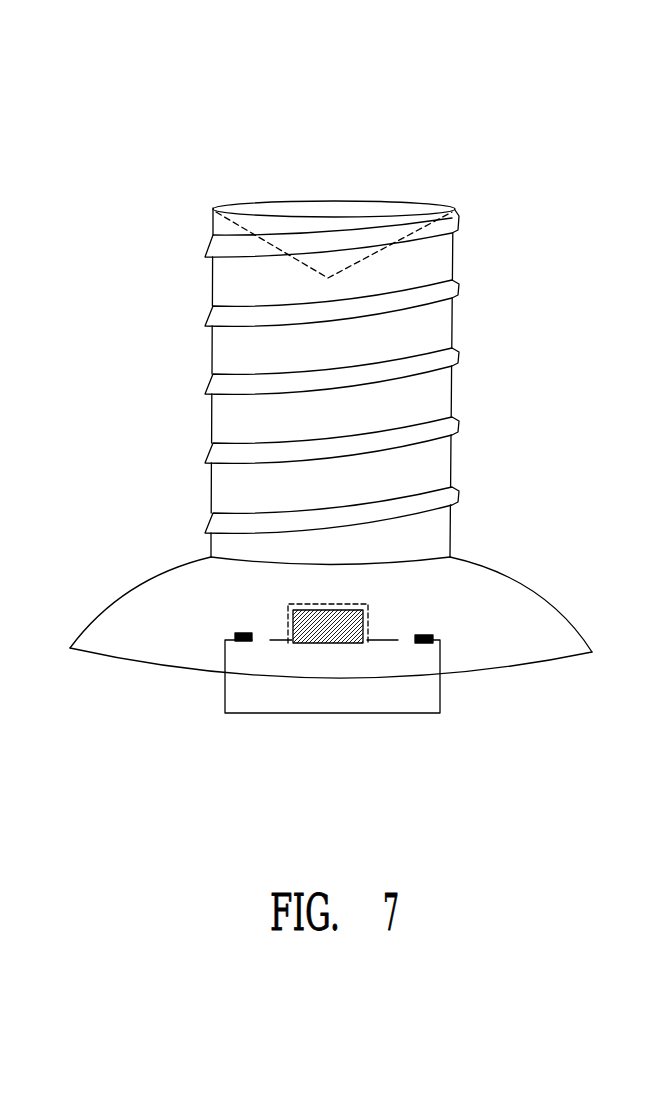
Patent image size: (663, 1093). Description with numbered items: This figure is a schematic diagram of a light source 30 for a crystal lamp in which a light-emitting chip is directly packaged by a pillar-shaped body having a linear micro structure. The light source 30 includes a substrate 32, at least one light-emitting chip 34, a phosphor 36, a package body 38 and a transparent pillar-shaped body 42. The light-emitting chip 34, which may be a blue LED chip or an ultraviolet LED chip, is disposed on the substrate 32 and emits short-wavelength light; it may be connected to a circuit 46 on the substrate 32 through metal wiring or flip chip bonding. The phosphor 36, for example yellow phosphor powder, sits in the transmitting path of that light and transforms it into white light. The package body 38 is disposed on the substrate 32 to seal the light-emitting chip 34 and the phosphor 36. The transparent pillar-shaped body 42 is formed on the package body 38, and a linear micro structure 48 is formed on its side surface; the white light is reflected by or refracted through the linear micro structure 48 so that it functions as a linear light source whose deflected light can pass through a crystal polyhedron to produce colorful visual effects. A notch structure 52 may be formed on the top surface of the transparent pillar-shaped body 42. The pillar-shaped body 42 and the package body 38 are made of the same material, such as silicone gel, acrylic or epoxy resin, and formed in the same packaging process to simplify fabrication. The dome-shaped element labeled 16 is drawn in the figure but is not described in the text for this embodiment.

The light source 30 is at (106, 37).
The notch structure 52 is at (322, 186).
The linear micro structure 48 is at (454, 289).
The transparent pillar-shaped body 42 is at (460, 384).
The base / lens cover 16 is at (331, 608).
The package body 38 is at (142, 603).
The light-emitting chip 34 is at (305, 633).
The phosphor 36 is at (367, 620).
The circuit 46 is at (435, 637).
The substrate 32 is at (333, 713).